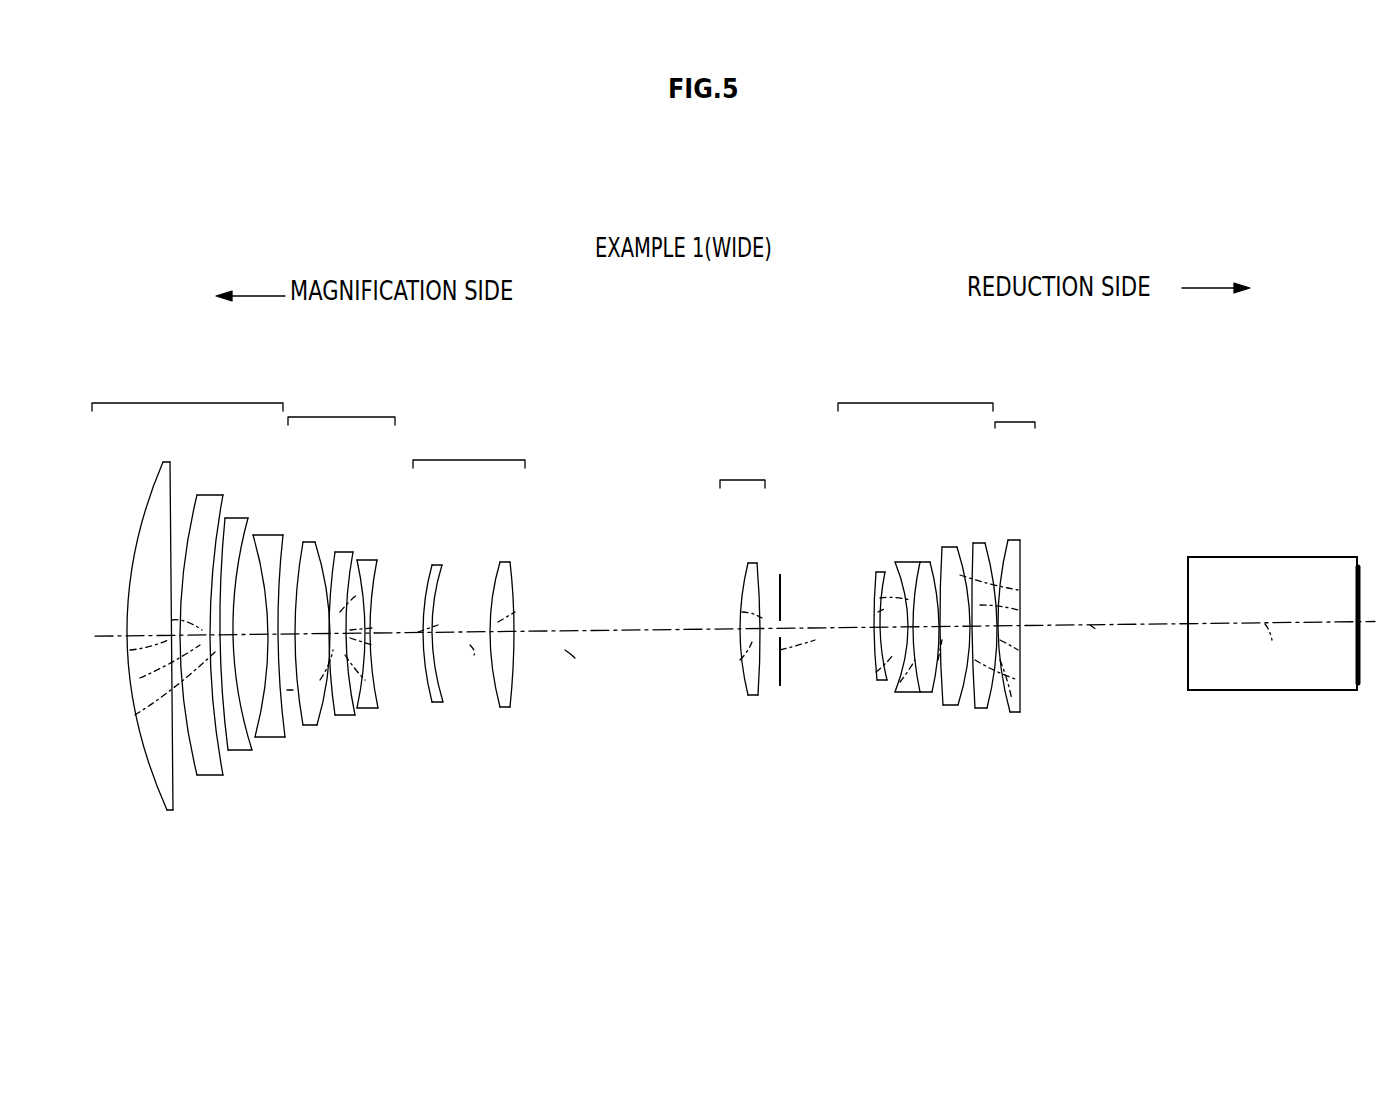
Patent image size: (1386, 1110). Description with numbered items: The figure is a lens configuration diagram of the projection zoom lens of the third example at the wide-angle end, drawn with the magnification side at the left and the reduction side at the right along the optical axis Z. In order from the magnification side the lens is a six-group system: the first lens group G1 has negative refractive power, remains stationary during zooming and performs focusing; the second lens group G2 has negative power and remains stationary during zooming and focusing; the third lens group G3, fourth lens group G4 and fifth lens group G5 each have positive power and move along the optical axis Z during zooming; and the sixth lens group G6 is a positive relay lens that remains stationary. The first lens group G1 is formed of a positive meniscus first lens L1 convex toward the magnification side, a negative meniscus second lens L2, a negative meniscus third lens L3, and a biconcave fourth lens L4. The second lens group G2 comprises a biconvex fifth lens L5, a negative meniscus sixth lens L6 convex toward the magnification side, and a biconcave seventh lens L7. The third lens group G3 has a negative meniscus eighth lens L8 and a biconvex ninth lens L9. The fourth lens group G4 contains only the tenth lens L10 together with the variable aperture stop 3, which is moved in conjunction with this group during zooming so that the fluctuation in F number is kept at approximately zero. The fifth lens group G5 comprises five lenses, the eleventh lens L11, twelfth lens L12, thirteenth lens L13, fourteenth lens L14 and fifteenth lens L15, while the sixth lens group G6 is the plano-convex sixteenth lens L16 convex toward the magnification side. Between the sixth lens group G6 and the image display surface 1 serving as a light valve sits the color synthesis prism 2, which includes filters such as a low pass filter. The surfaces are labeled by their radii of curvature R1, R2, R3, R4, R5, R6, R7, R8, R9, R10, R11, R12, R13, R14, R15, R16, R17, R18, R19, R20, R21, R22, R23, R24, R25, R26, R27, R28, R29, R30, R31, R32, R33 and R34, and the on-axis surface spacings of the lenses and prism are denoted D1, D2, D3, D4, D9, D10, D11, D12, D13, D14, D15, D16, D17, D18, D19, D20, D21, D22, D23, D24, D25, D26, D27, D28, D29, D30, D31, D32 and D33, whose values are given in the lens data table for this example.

The image display surface 1 is at (1364, 667).
The color synthesis prism 2 is at (1272, 690).
The aperture (variable aperture stop) 3 is at (774, 676).
The optical axis Z is at (650, 648).
The first lens group G1 is at (187, 391).
The second lens group G2 is at (341, 405).
The third lens group G3 is at (469, 448).
The fourth lens group G4 is at (742, 468).
The fifth lens group G5 is at (915, 391).
The sixth lens group G6 is at (1015, 409).
The first lens L1 is at (160, 802).
The second lens L2 is at (204, 776).
The third lens L3 is at (240, 752).
The fourth lens L4 is at (272, 737).
The fifth lens L5 is at (302, 764).
The sixth lens L6 is at (350, 720).
The seventh lens L7 is at (376, 706).
The eighth lens L8 is at (432, 704).
The ninth lens L9 is at (496, 710).
The tenth lens L10 is at (745, 689).
The eleventh lens L11 is at (874, 682).
The twelfth lens L12 is at (896, 720).
The thirteenth lens L13 is at (922, 722).
The fourteenth lens L14 is at (950, 712).
The fifteenth lens L15 is at (981, 712).
The sixteenth lens L16 is at (1014, 712).
The radius of curvature of first lens surface R1 is at (128, 638).
The radius of curvature of second lens surface R2 is at (170, 627).
The radius of curvature of third lens surface R3 is at (192, 519).
The radius of curvature of fourth lens surface R4 is at (220, 512).
The radius of curvature of fifth lens surface R5 is at (227, 514).
The radius of curvature of sixth lens surface R6 is at (250, 517).
The radius of curvature of seventh lens surface R7 is at (254, 534).
The radius of curvature of eighth lens surface R8 is at (283, 535).
The radius of curvature of ninth lens surface R9 is at (300, 534).
The radius of curvature of tenth lens surface R10 is at (320, 536).
The radius of curvature of eleventh lens surface R11 is at (339, 547).
The radius of curvature of twelfth lens surface R12 is at (354, 551).
The radius of curvature of thirteenth lens surface R13 is at (362, 553).
The radius of curvature of fourteenth lens surface R14 is at (382, 558).
The radius of curvature of fifteenth lens surface R15 is at (424, 574).
The radius of curvature of sixteenth lens surface R16 is at (448, 562).
The radius of curvature of seventeenth lens surface R17 is at (498, 568).
The radius of curvature of eighteenth lens surface R18 is at (516, 590).
The radius of curvature of nineteenth lens surface R19 is at (744, 583).
The radius of curvature of twentieth lens surface R20 is at (766, 588).
The radius of curvature of twenty-first surface R21 is at (782, 576).
The radius of curvature of twenty-second lens surface R22 is at (874, 578).
The radius of curvature of twenty-third lens surface R23 is at (882, 573).
The radius of curvature of twenty-fourth lens surface R24 is at (896, 562).
The radius of curvature of twenty-fifth lens surface R25 is at (915, 559).
The radius of curvature of twenty-sixth lens surface R26 is at (927, 558).
The radius of curvature of twenty-seventh lens surface R27 is at (943, 544).
The radius of curvature of twenty-eighth lens surface R28 is at (958, 544).
The radius of curvature of twenty-ninth lens surface R29 is at (974, 540).
The radius of curvature of thirtieth lens surface R30 is at (988, 543).
The radius of curvature of thirty-first lens surface R31 is at (1013, 542).
The radius of curvature of thirty-second lens surface R32 is at (1022, 564).
The radius of curvature of thirty-third surface R33 is at (1188, 573).
The radius of curvature of thirty-fourth surface R34 is at (1356, 567).
The on-axis surface spacing D1 is at (130, 656).
The on-axis surface spacing D2 is at (140, 678).
The on-axis surface spacing D3 is at (135, 715).
The on-axis surface spacing D4 is at (172, 619).
The on-axis surface spacing D9 is at (295, 692).
The on-axis surface spacing D10 is at (321, 680).
The on-axis surface spacing D11 is at (357, 595).
The on-axis surface spacing D12 is at (365, 680).
The on-axis surface spacing D13 is at (384, 619).
The on-axis surface spacing D14 is at (384, 657).
The on-axis surface spacing D15 is at (451, 619).
The on-axis surface spacing D16 is at (462, 660).
The on-axis surface spacing D17 is at (504, 620).
The on-axis surface spacing D18 is at (567, 648).
The on-axis surface spacing D19 is at (738, 648).
The on-axis surface spacing D20 is at (742, 606).
The on-axis surface spacing D21 is at (838, 640).
The on-axis surface spacing D22 is at (878, 611).
The on-axis surface spacing D23 is at (876, 672).
The on-axis surface spacing D24 is at (880, 598).
The on-axis surface spacing D25 is at (892, 686).
The on-axis surface spacing D26 is at (938, 666).
The on-axis surface spacing D27 is at (1013, 697).
The on-axis surface spacing D28 is at (1014, 581).
The on-axis surface spacing D29 is at (1024, 671).
The on-axis surface spacing D30 is at (1024, 604).
The on-axis surface spacing D31 is at (1034, 646).
The on-axis surface spacing D32 is at (1094, 624).
The on-axis surface spacing D33 is at (1272, 640).